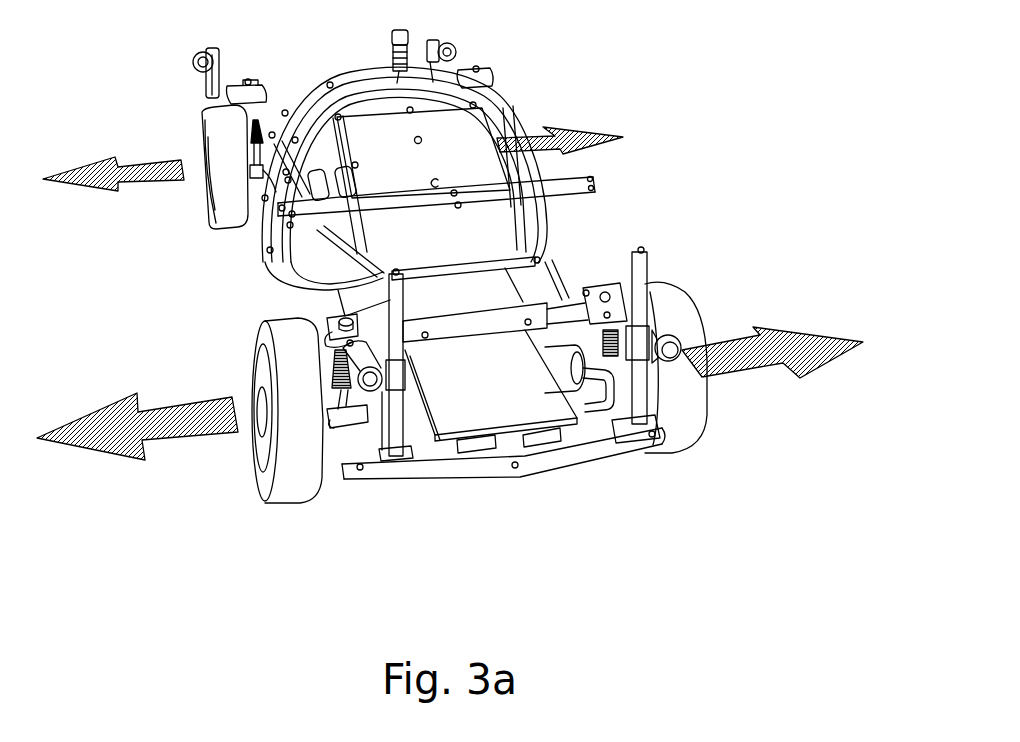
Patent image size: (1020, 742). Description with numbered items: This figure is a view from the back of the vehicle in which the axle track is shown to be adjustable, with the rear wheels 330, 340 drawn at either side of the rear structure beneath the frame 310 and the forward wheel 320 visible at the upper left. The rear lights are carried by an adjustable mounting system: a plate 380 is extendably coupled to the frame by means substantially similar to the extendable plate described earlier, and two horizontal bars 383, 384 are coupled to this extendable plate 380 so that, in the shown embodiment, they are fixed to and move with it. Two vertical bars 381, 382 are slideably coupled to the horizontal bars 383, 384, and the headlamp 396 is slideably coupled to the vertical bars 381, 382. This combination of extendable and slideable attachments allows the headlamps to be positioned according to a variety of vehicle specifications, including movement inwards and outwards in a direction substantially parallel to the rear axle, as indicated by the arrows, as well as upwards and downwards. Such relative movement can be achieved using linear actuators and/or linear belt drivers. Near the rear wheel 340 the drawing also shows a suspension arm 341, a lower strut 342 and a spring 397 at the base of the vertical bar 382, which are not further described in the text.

The roll cage frame 310 is at (536, 172).
The front wheel 320 is at (207, 209).
The rear wheel 330 is at (672, 312).
The rear wheel 340 is at (277, 488).
The suspension arm 341 is at (345, 422).
The lower strut 342 is at (384, 403).
The plate 380 is at (537, 410).
The vertical bar 381 is at (647, 268).
The vertical bar 382 is at (340, 318).
The horizontal bar 383 is at (565, 318).
The horizontal bar 384 is at (472, 467).
The headlamp 396 is at (672, 353).
The spring 397 is at (350, 374).